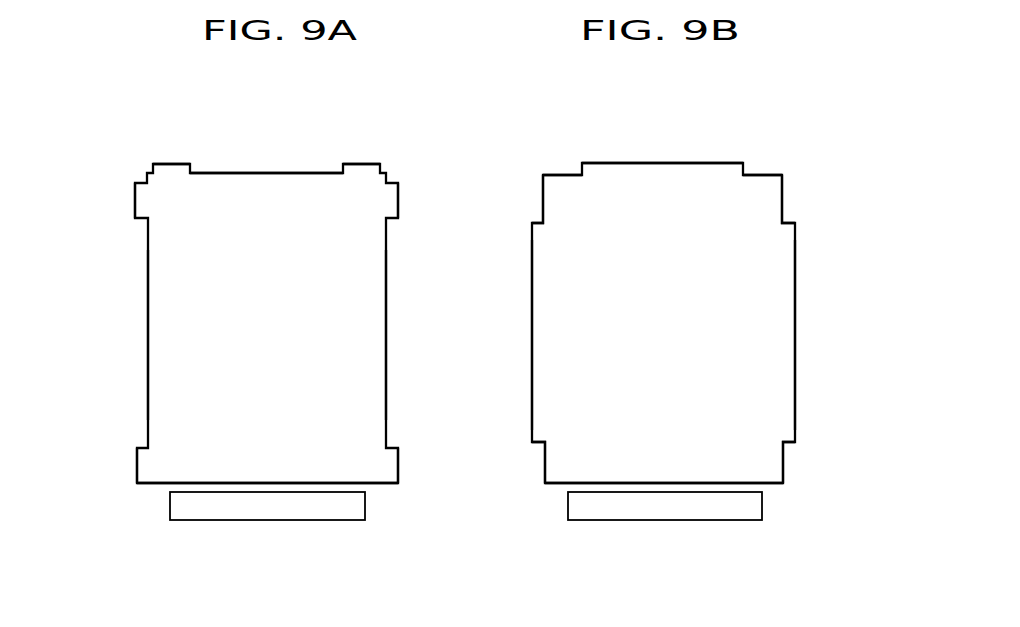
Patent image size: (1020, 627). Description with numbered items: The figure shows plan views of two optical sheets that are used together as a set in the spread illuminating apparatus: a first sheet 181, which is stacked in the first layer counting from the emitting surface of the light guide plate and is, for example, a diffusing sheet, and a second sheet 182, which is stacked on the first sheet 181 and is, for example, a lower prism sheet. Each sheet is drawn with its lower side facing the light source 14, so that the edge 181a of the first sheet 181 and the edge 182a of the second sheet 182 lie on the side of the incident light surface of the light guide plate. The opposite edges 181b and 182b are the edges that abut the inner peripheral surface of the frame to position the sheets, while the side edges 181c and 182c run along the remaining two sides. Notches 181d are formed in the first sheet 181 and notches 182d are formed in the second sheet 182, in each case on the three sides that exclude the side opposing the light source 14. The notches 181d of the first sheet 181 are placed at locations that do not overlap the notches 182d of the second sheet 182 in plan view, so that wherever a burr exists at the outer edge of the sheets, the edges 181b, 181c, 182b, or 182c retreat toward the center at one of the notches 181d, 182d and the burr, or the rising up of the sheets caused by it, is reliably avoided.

In FIG. 9A, the first sheet 181 is at (295, 333).
In FIG. 9A, the edge of first sheet on incident light surface side 181a is at (151, 487).
In FIG. 9A, the edge of first sheet opposing the incident light surface 181b is at (172, 163).
In FIG. 9A, the edge of first sheet 181c is at (135, 202).
In FIG. 9A, the notches of first sheet 181d is at (262, 172).
In FIG. 9B, the second sheet 182 is at (693, 333).
In FIG. 9B, the edge of second sheet on incident light surface side 182a is at (557, 487).
In FIG. 9B, the edge of second sheet opposing the incident light surface 182b is at (665, 163).
In FIG. 9B, the edge of second sheet 182c is at (532, 278).
In FIG. 9B, the notches of second sheet 182d is at (543, 208).
In FIG. 9A, the light source 14 is at (365, 507).
In FIG. 9B, the light source 14 is at (762, 505).